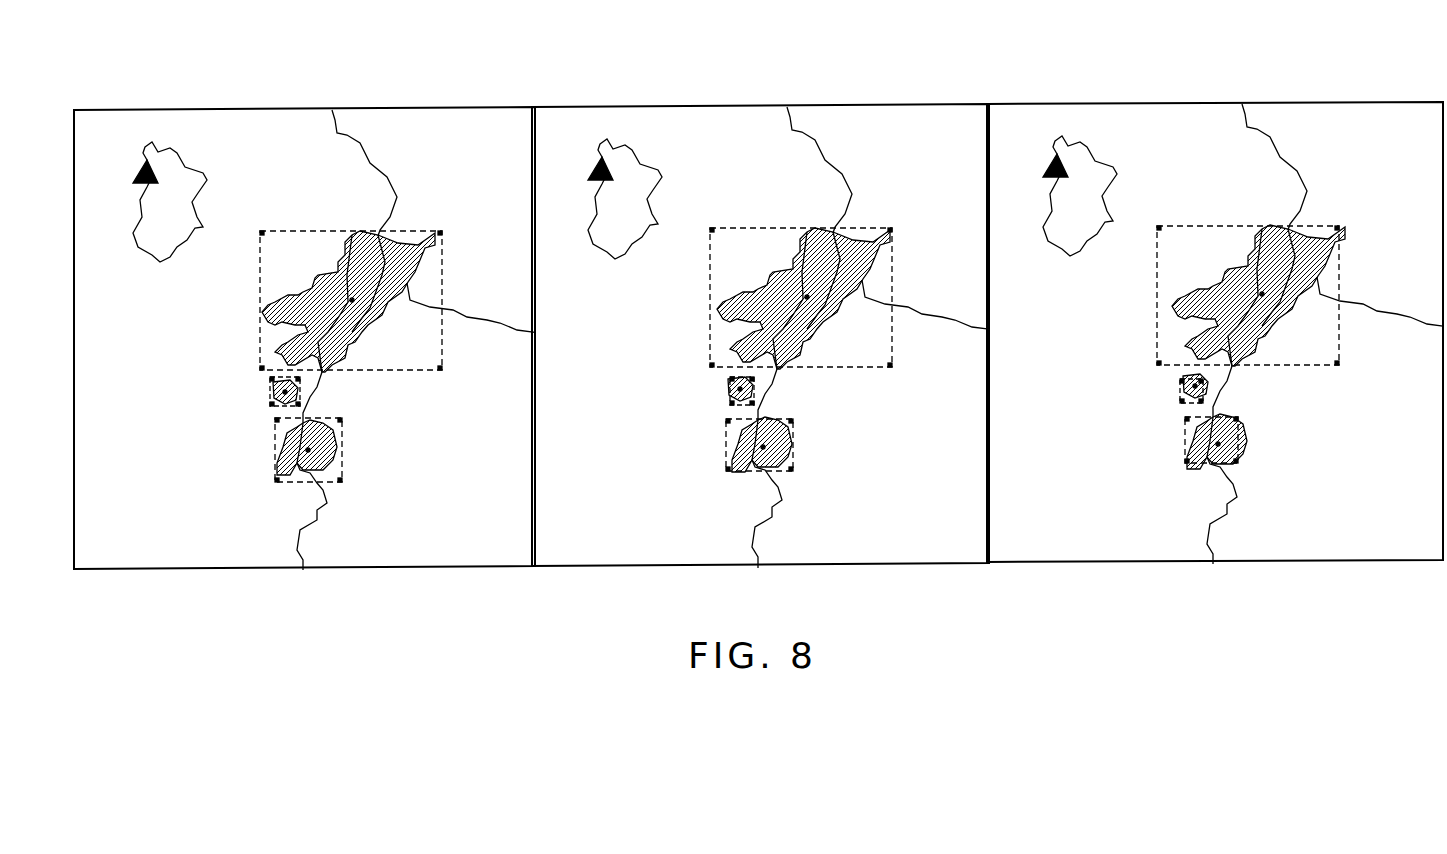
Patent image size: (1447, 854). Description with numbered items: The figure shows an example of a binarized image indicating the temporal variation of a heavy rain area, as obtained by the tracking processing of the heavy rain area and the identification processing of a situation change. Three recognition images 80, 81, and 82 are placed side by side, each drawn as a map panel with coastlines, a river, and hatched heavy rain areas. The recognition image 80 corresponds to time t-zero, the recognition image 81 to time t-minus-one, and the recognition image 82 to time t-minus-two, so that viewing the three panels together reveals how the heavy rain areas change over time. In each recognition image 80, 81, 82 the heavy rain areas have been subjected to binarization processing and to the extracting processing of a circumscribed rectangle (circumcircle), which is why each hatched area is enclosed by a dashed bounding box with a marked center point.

The recognition image 80 is at (1213, 103).
The recognition image 81 is at (757, 106).
The recognition image 82 is at (297, 109).